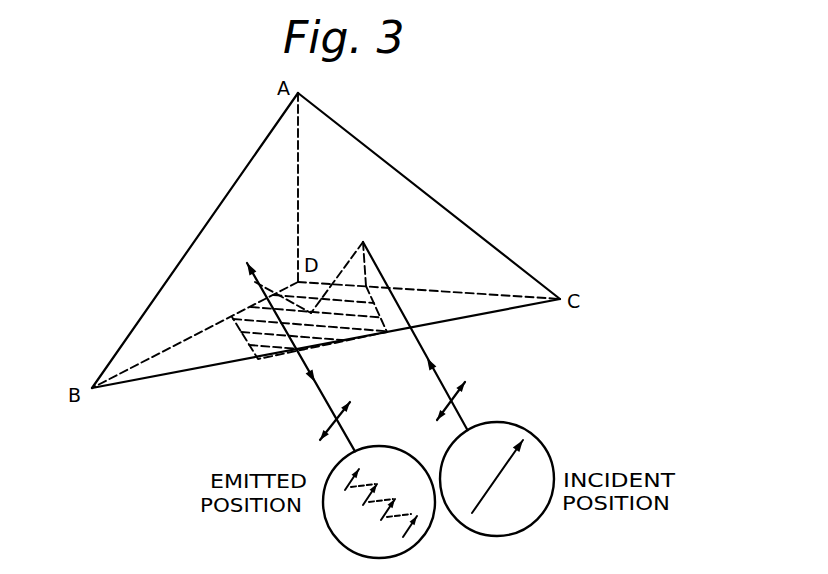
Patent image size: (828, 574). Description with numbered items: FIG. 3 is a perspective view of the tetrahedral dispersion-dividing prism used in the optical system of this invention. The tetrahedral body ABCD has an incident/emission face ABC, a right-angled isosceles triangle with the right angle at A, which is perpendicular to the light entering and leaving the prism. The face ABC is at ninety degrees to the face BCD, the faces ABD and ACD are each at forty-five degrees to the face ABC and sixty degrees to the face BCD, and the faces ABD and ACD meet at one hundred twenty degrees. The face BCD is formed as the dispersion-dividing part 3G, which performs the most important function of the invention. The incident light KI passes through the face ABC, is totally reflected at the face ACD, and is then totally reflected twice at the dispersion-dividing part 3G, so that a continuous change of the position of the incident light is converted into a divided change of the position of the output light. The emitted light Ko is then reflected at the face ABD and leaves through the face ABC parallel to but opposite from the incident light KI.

The dispersion-dividing part 3G is at (309, 336).
The emitted light Ko is at (265, 272).
The incident light KI is at (350, 255).